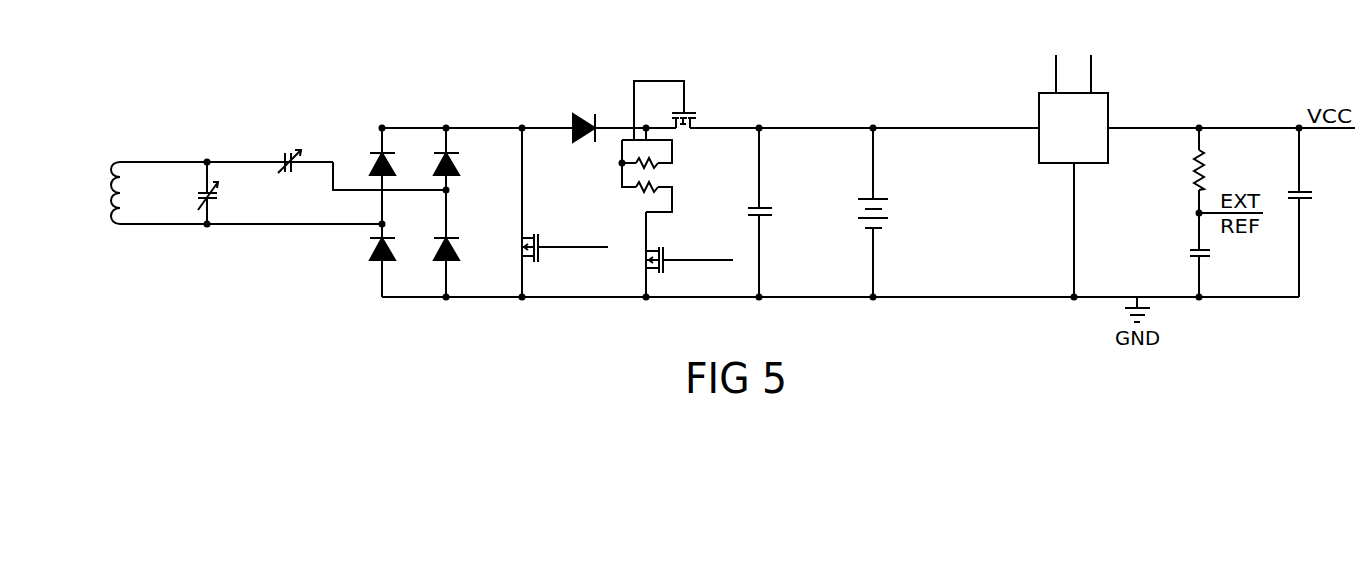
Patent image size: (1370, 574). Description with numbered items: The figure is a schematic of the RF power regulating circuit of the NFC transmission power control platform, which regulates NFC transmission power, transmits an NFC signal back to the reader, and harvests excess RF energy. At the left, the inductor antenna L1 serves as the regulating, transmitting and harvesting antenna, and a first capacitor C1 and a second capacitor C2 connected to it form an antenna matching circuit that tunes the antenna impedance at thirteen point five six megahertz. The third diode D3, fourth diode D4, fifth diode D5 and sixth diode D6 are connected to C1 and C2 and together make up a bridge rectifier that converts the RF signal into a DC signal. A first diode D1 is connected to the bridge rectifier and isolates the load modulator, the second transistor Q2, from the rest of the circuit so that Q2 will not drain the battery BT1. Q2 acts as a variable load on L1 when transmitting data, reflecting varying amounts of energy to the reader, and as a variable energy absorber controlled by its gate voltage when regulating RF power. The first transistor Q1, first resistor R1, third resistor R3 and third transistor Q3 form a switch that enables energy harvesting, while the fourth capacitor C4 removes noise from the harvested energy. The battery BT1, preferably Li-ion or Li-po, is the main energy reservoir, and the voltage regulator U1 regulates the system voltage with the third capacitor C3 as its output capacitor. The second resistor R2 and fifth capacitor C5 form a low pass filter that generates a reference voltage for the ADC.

The inductor antenna L1 is at (129, 193).
The second capacitor C2 is at (222, 193).
The first capacitor C1 is at (270, 151).
The third diode D3 is at (368, 165).
The fourth diode D4 is at (459, 165).
The fifth diode D5 is at (368, 250).
The sixth diode D6 is at (459, 250).
The first diode D1 is at (585, 117).
The first transistor Q1 is at (672, 110).
The first resistor R1 is at (647, 148).
The third resistor R3 is at (647, 207).
The second transistor Q2 is at (565, 253).
The third transistor Q3 is at (689, 272).
The fourth capacitor C4 is at (775, 212).
The battery BT1 is at (923, 212).
The voltage regulator U1 is at (1084, 176).
The second resistor R2 is at (1184, 212).
The fifth capacitor C5 is at (1185, 253).
The third capacitor C3 is at (1314, 212).